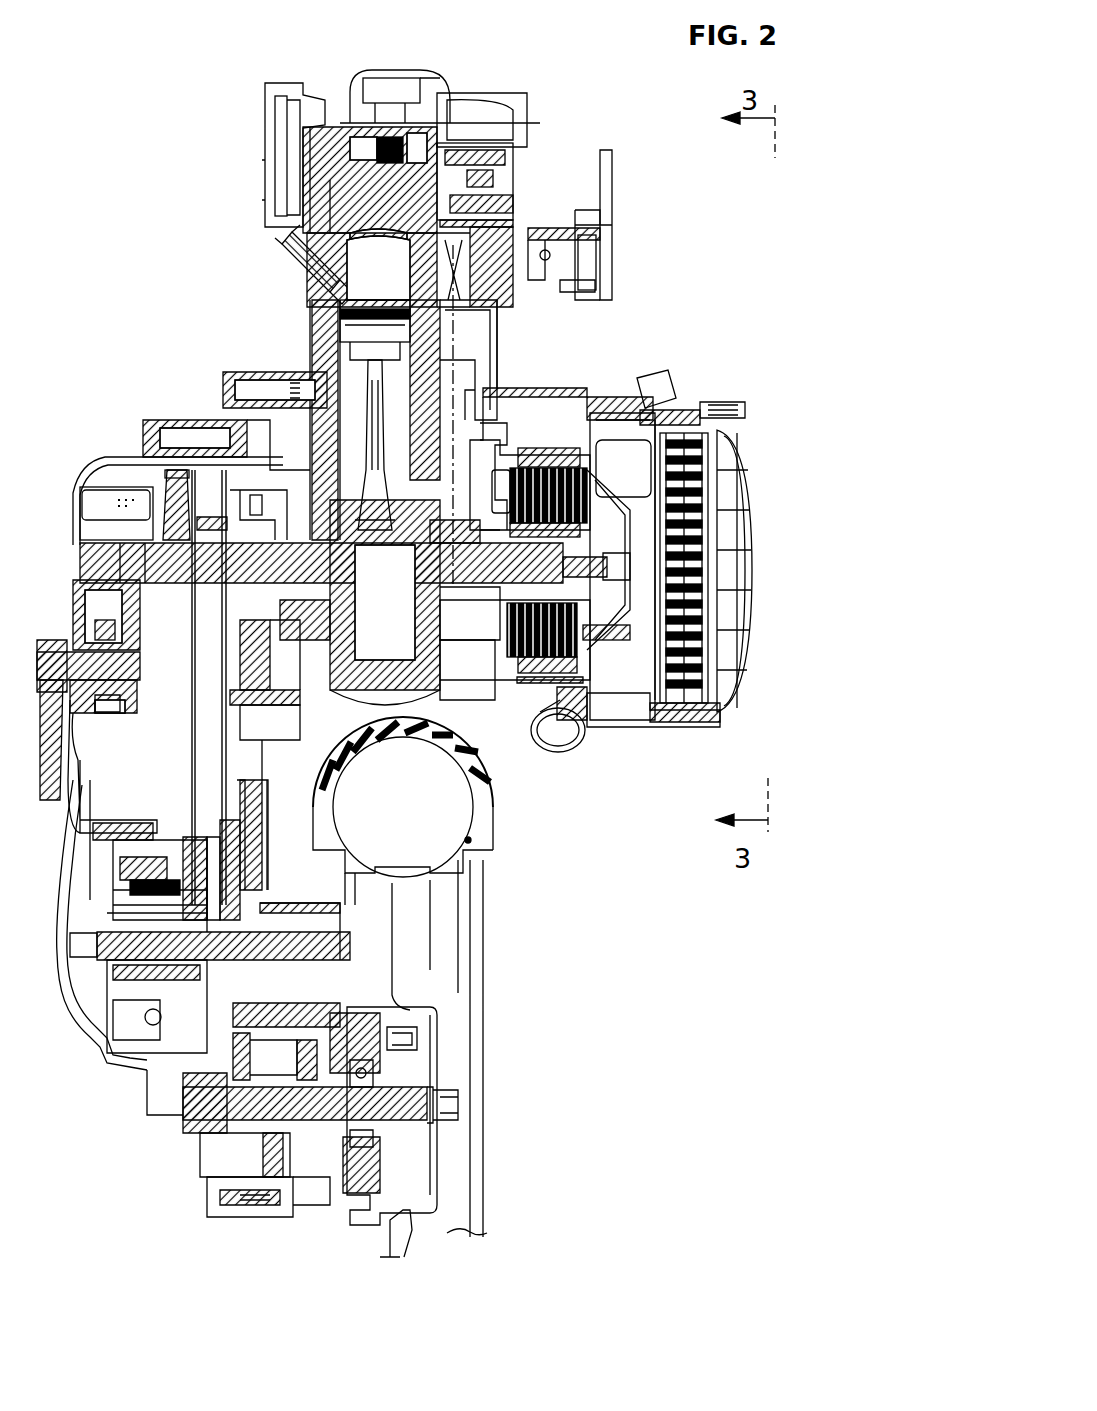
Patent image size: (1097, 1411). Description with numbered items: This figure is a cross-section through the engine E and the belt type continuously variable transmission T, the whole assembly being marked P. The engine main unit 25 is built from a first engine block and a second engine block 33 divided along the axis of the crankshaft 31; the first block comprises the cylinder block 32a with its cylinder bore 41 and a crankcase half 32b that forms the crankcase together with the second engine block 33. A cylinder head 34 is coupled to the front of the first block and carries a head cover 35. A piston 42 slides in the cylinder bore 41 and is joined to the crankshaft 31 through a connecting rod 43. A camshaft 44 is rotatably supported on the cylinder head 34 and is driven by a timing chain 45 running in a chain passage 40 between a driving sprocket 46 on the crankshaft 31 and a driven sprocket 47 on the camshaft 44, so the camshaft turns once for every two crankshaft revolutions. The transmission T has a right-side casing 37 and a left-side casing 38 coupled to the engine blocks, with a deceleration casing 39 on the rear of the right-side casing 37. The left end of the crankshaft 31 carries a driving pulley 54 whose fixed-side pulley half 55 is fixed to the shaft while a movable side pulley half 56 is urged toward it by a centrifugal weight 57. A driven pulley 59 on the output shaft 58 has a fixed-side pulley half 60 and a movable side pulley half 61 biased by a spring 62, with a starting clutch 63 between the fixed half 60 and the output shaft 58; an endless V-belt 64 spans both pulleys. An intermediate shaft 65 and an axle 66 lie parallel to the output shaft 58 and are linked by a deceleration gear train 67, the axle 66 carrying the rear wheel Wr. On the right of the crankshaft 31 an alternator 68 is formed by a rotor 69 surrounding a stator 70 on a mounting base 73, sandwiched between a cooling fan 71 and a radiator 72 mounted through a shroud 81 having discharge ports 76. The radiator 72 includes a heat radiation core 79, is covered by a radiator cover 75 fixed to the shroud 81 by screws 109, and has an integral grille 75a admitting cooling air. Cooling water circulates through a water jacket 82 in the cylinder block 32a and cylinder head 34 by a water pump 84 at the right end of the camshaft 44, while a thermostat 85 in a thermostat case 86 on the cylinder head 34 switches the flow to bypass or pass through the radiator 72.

The engine main unit 25 is at (146, 408).
The crankshaft 31 is at (392, 652).
The cylinder block 32a is at (315, 322).
The crankcase half 32b is at (225, 378).
The second engine block 33 is at (480, 700).
The cylinder head 34 is at (305, 290).
The head cover 35 is at (318, 100).
The right-side casing 37 is at (265, 810).
The left-side casing 38 is at (75, 755).
The deceleration casing 39 is at (330, 882).
The chain passage 40 is at (510, 450).
The cylinder bore 41 is at (352, 360).
The piston 42 is at (458, 322).
The connecting rod 43 is at (357, 372).
The camshaft 44 is at (330, 205).
The timing chain 45 is at (456, 362).
The driving sprocket 46 is at (462, 518).
The driven sprocket 47 is at (435, 95).
The driving pulley 54 is at (215, 615).
The fixed-side pulley half 55 is at (170, 460).
The movable side pulley half 56 is at (235, 520).
The centrifugal weight 57 is at (265, 680).
The output shaft 58 is at (210, 991).
The driven pulley 59 is at (211, 838).
The fixed-side pulley half 60 is at (245, 870).
The movable side pulley half 61 is at (180, 875).
The spring 62 is at (105, 840).
The starting clutch 63 is at (95, 1028).
The endless V-belt 64 is at (203, 705).
The intermediate shaft 65 is at (320, 1040).
The axle 66 is at (437, 1165).
The deceleration gear train 67 is at (238, 1152).
The alternator 68 is at (670, 893).
The rotor 69 is at (573, 757).
The stator 70 is at (558, 752).
The cooling fan 71 is at (660, 390).
The radiator 72 is at (722, 548).
The mounting base 73 is at (500, 445).
The radiator cover 75 is at (700, 722).
The grille 75a is at (752, 635).
The discharge ports 76 is at (607, 727).
The heat radiation core 79 is at (690, 568).
The shroud 81 is at (623, 457).
The water jacket 82 is at (312, 305).
The water pump 84 is at (510, 170).
The thermostat 85 is at (600, 240).
The thermostat case 86 is at (580, 220).
The screws 109 is at (735, 408).
The engine E is at (518, 347).
The power unit P is at (180, 338).
The belt type continuously variable transmission T is at (335, 840).
The rear wheel Wr is at (478, 780).